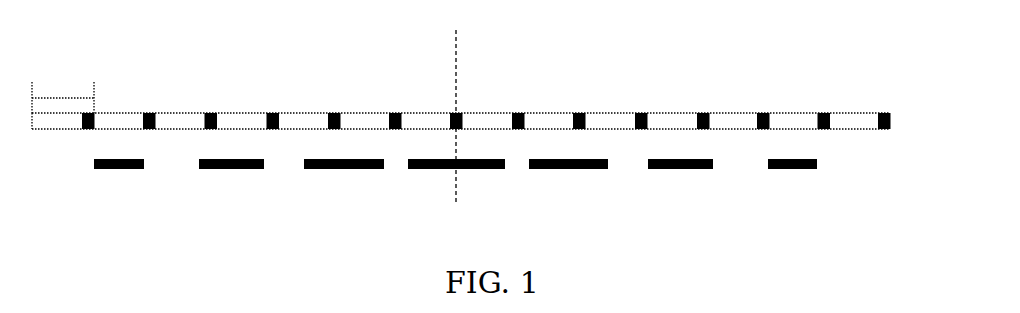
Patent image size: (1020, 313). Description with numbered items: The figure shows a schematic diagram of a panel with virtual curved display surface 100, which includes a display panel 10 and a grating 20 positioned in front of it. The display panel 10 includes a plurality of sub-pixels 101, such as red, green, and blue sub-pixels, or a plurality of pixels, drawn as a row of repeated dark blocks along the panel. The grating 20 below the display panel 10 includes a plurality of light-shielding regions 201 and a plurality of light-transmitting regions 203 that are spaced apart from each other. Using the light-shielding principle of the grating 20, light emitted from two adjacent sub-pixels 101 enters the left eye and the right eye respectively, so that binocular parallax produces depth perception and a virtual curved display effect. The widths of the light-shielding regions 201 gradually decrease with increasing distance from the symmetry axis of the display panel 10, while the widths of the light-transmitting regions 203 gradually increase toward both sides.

The panel with virtual curved display surface 100 is at (69, 42).
The display panel 10 is at (890, 121).
The sub-pixel 101 is at (60, 98).
The grating 20 is at (856, 168).
The light-shielding region 201 is at (568, 169).
The light-transmitting region 203 is at (513, 159).